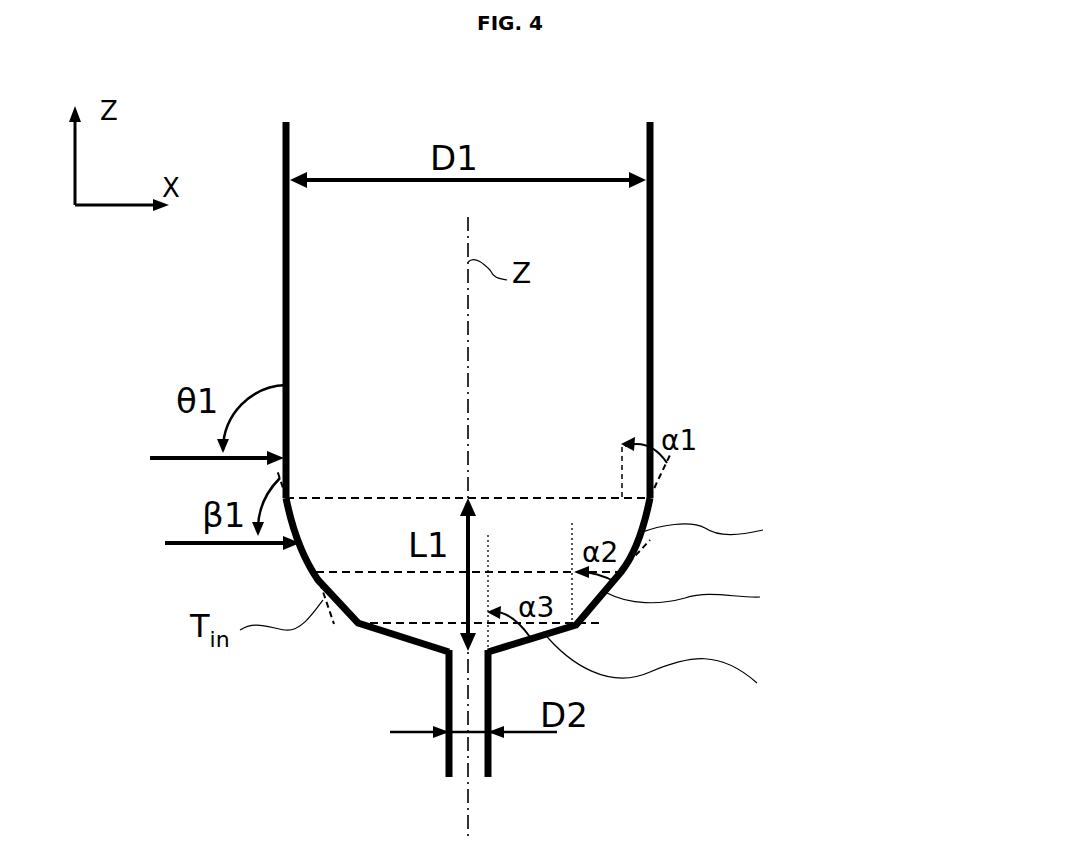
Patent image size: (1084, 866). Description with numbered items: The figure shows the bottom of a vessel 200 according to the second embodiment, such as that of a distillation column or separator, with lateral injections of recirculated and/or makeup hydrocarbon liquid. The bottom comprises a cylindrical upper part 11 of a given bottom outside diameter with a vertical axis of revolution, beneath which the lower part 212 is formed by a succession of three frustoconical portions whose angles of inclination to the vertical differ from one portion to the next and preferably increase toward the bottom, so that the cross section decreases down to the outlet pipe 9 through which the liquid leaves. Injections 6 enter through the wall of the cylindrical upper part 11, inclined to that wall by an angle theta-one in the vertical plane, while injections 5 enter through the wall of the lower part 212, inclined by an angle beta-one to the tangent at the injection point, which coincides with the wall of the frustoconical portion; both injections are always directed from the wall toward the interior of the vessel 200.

The vessel 200 is at (717, 217).
The cylindrical upper part 11 is at (655, 307).
The lower part 212 is at (835, 498).
The outlet pipe 9 is at (443, 763).
The injections 6 is at (177, 455).
The injections 5 is at (218, 545).